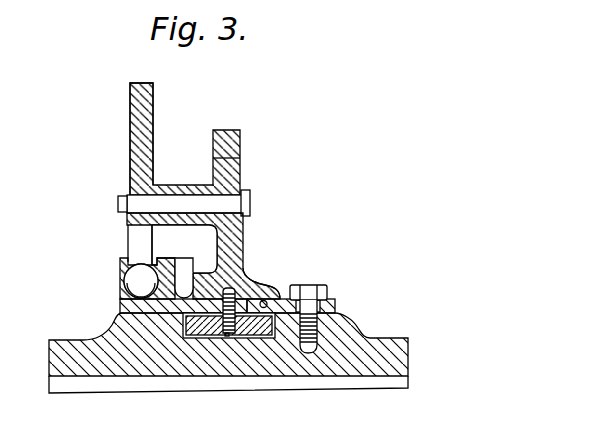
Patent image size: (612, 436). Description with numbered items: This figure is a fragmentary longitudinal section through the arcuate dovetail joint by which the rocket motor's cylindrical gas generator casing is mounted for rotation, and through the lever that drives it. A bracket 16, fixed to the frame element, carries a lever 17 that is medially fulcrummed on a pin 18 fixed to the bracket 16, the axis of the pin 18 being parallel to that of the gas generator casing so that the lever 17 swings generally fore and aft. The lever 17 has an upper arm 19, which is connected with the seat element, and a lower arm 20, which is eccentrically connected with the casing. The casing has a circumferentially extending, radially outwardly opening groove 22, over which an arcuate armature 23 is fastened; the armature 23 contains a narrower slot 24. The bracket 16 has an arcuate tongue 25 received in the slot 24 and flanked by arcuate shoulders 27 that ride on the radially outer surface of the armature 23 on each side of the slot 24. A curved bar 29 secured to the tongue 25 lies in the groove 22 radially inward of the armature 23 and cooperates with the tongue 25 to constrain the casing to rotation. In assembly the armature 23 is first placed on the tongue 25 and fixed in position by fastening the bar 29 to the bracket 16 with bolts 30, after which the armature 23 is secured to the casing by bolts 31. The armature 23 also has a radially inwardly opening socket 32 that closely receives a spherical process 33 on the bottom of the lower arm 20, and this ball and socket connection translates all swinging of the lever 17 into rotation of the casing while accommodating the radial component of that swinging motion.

The bracket 16 is at (214, 252).
The lever 17 is at (145, 137).
The pin 18 is at (120, 207).
The upper arm 19 is at (130, 98).
The lower arm 20 is at (137, 244).
The groove 22 is at (224, 362).
The arcuate armature 23 is at (287, 300).
The slot 24 is at (247, 272).
The arcuate tongue 25 is at (193, 312).
The arcuate shoulders 27 is at (198, 270).
The curved bar 29 is at (200, 340).
The bolts 30 is at (224, 334).
The bolts 31 is at (315, 284).
The socket 32 is at (152, 266).
The spherical process 33 is at (133, 275).